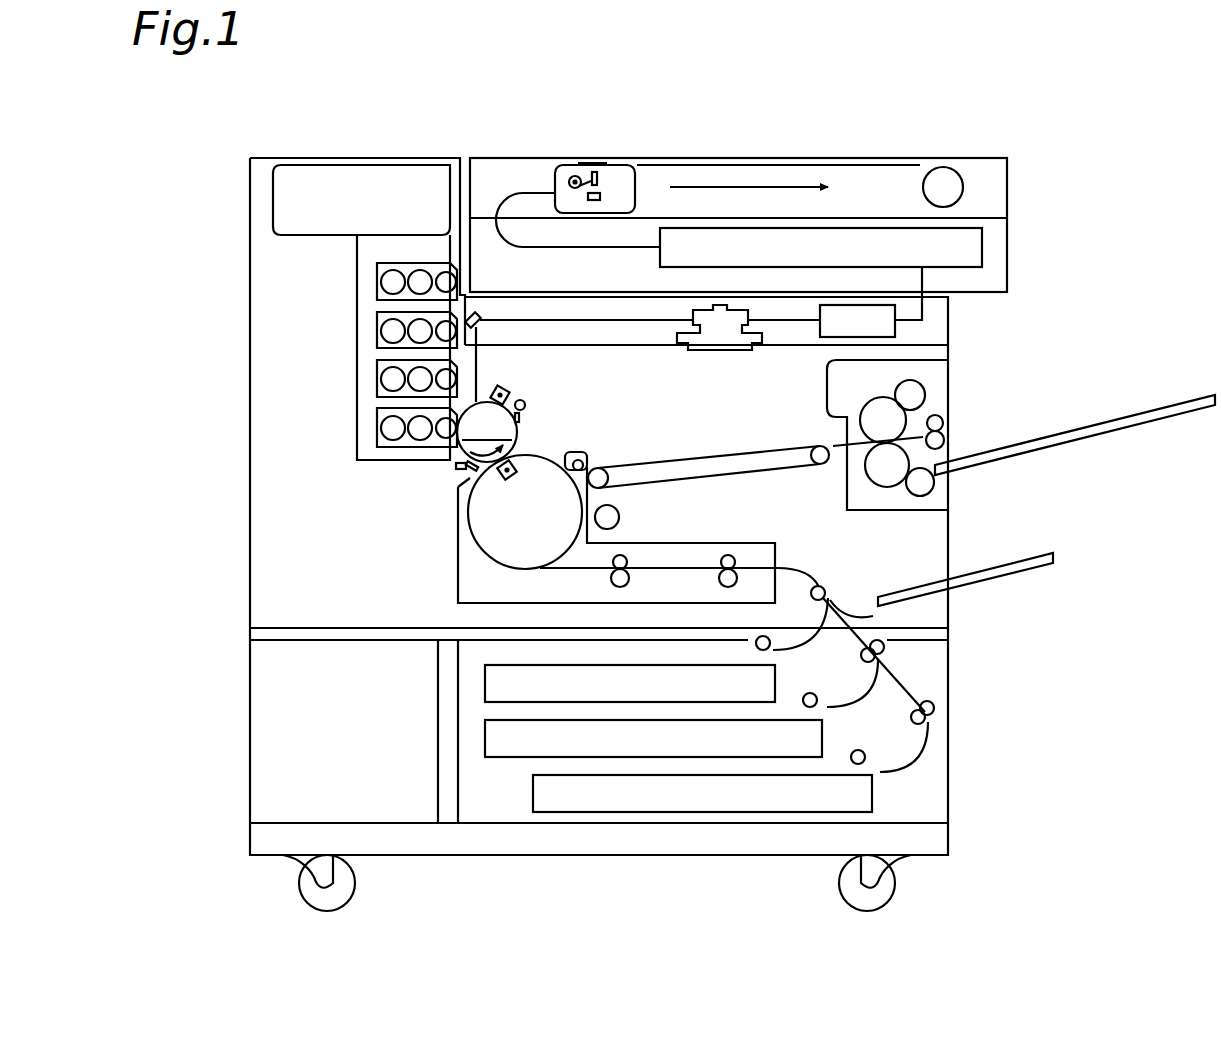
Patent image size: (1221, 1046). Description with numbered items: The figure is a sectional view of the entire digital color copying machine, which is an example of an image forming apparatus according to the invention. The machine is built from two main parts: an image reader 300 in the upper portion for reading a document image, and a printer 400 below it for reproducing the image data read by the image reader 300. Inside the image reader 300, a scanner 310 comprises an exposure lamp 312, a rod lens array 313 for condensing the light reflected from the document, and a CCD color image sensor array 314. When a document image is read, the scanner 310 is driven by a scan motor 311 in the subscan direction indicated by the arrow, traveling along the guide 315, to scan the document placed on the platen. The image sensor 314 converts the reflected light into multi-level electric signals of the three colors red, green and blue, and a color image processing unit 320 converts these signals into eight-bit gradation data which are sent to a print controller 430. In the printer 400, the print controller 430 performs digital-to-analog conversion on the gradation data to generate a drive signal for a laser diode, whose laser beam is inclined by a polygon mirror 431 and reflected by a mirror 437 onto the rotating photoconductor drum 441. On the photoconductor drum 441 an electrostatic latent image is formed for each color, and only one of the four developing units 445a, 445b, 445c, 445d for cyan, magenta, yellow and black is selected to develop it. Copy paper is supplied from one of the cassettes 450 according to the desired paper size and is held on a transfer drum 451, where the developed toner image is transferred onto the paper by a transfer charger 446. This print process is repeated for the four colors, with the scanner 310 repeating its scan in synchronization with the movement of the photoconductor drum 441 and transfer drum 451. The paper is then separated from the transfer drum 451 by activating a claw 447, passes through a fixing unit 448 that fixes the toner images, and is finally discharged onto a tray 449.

The image reader 300 is at (1012, 183).
The scanner 310 is at (643, 183).
The scan motor 311 is at (946, 167).
The exposure lamp 312 is at (568, 178).
The rod lens array 313 is at (603, 166).
The CCD color image sensor array 314 is at (596, 201).
The guide rail 315 is at (779, 162).
The color image processing unit 320 is at (978, 247).
The printer 400 is at (243, 418).
The print controller 430 is at (895, 330).
The polygon mirror 431 is at (720, 350).
The mirror 437 is at (482, 314).
The photoconductor drum 441 is at (491, 423).
The developing unit 445a is at (377, 283).
The developing unit 445b is at (377, 332).
The developing unit 445c is at (377, 380).
The developing unit 445d is at (377, 430).
The transfer charger 446 is at (511, 480).
The claw 447 is at (580, 458).
The fixing unit 448 is at (933, 402).
The tray 449 is at (1130, 415).
The cassettes 450 is at (533, 793).
The transfer drum 451 is at (470, 550).